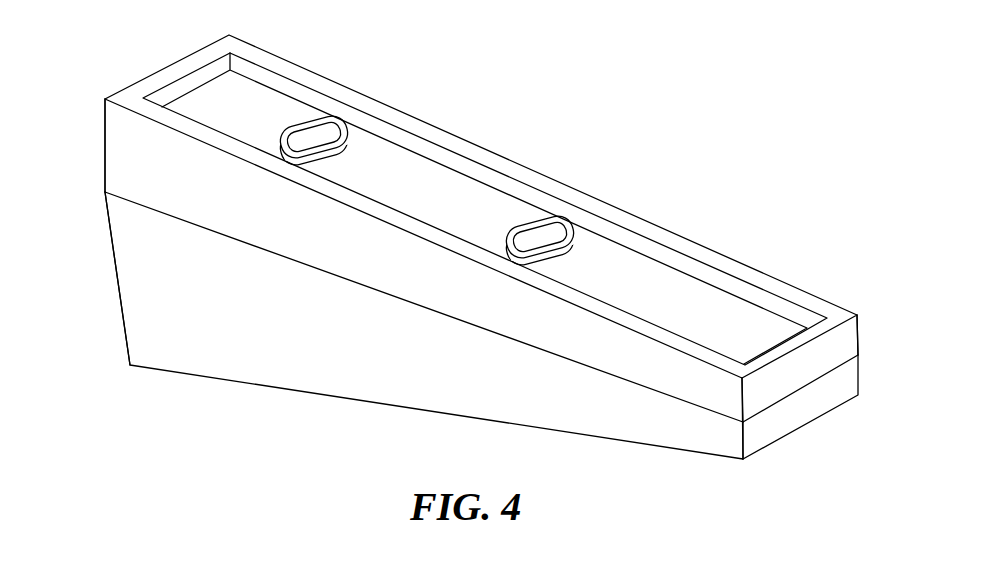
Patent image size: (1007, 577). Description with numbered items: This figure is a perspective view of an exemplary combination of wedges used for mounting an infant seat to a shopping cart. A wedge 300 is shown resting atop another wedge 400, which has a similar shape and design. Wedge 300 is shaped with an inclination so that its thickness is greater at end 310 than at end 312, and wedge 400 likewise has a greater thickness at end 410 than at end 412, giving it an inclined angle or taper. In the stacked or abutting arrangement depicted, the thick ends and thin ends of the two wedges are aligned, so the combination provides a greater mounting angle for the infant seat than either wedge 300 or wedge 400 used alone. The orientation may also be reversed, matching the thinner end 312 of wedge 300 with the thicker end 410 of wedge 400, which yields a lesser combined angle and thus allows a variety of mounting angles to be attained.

The wedge 300 is at (682, 227).
The end 310 is at (100, 113).
The end 312 is at (863, 335).
The wedge 400 is at (815, 407).
The end 410 is at (110, 323).
The end 412 is at (773, 458).